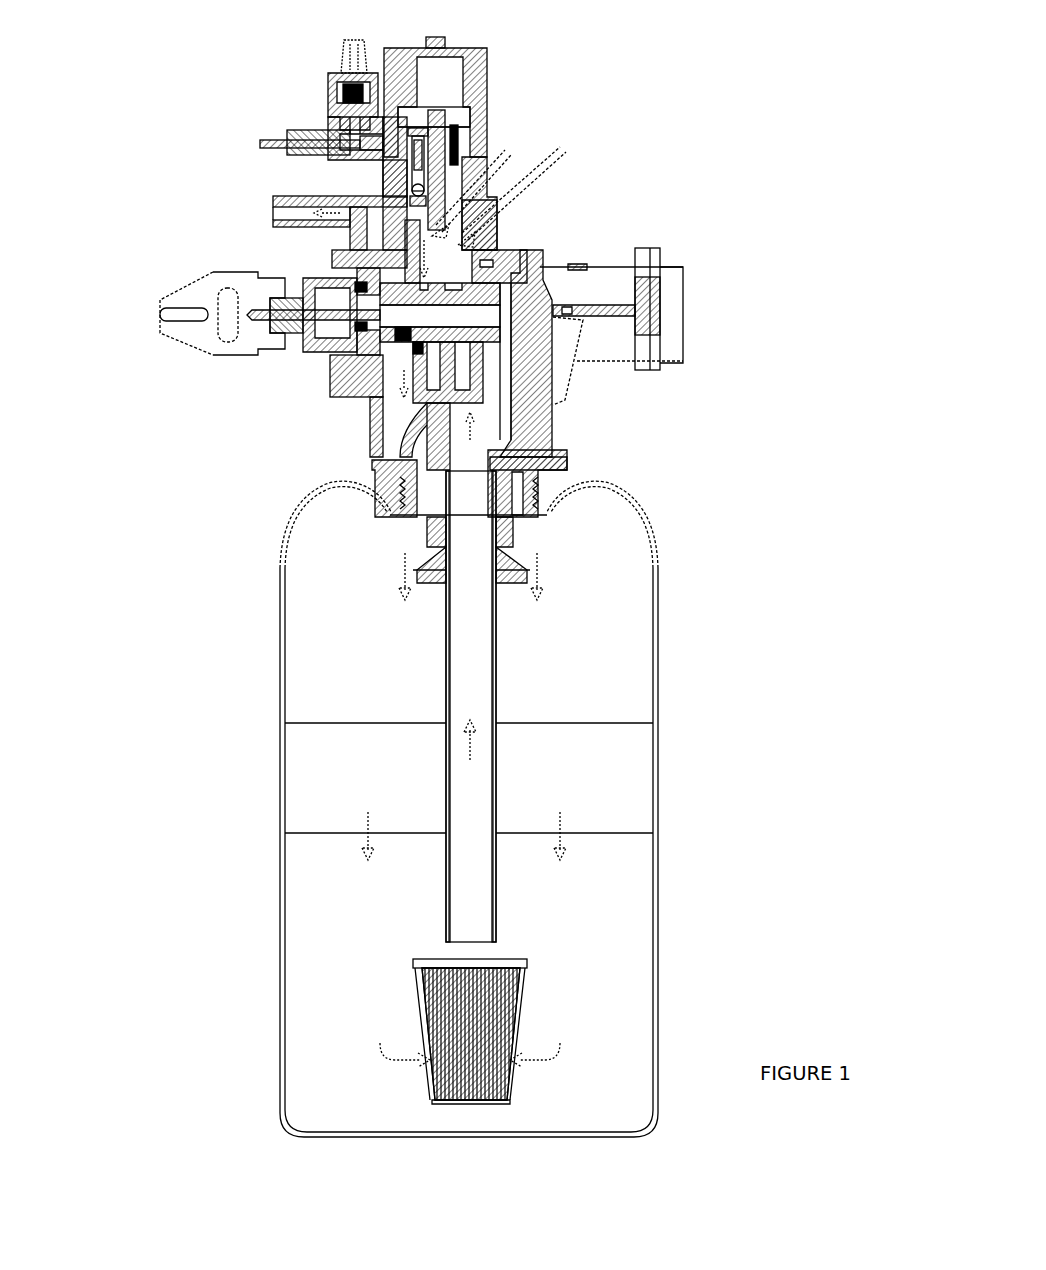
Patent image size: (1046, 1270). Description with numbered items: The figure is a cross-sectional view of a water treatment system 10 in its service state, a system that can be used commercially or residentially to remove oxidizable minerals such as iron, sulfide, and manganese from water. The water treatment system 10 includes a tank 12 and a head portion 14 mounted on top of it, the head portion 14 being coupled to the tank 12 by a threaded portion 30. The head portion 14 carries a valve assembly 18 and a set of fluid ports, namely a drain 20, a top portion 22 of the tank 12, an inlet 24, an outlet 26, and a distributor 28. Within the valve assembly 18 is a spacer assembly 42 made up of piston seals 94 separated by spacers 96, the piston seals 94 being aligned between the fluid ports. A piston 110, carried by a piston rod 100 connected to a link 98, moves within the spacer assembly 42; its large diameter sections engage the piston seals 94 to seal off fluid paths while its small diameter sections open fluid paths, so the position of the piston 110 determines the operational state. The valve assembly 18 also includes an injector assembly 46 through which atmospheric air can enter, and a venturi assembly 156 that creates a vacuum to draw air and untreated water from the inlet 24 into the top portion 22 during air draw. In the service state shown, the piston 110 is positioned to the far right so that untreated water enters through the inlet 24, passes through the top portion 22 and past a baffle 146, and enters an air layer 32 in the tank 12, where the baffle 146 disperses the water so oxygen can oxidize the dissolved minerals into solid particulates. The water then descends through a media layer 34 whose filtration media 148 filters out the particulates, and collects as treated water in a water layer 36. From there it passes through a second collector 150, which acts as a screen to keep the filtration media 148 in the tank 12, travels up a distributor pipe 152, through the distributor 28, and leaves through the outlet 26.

The water treatment system 10 is at (700, 45).
The tank 12 is at (658, 636).
The head portion 14 is at (627, 214).
The valve assembly 18 is at (234, 305).
The drain 20 is at (290, 210).
The top portion 22 is at (385, 306).
The inlet 24 is at (433, 250).
The outlet 26 is at (462, 245).
The distributor 28 is at (512, 248).
The threaded portion 30 is at (545, 490).
The air layer 32 is at (320, 630).
The media layer 34 is at (312, 795).
The water layer 36 is at (312, 945).
The spacer assembly 42 is at (398, 345).
The injector assembly 46 is at (340, 47).
The piston seals 94 is at (420, 348).
The spacers 96 is at (360, 286).
The link 98 is at (215, 320).
The piston rod 100 is at (272, 316).
The piston 110 is at (393, 333).
The baffle 146 is at (502, 568).
The filtration media 148 is at (610, 792).
The second collector 150 is at (500, 1027).
The distributor pipe 152 is at (478, 700).
The venturi assembly 156 is at (432, 190).